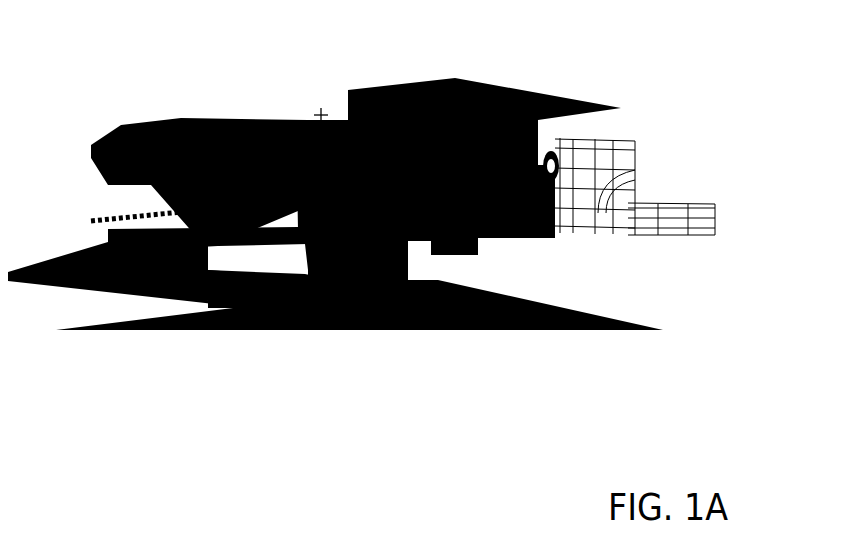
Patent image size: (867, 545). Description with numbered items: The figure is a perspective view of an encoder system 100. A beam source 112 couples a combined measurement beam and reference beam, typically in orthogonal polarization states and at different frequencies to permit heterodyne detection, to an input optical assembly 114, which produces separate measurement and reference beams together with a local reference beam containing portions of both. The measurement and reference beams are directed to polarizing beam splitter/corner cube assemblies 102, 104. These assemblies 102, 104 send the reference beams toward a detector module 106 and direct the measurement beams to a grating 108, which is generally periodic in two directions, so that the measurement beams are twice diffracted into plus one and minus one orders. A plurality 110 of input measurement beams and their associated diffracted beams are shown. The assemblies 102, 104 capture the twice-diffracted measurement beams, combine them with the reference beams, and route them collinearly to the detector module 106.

The encoder system 100 is at (650, 361).
The polarizing beam splitter/corner cube assembly 102 is at (121, 116).
The polarizing beam splitter/corner cube assembly 104 is at (267, 163).
The detector module 106 is at (583, 98).
The grating 108 is at (523, 290).
The plurality of input measurement beams 110 is at (350, 323).
The beam source 112 is at (667, 167).
The input optical assembly 114 is at (567, 224).